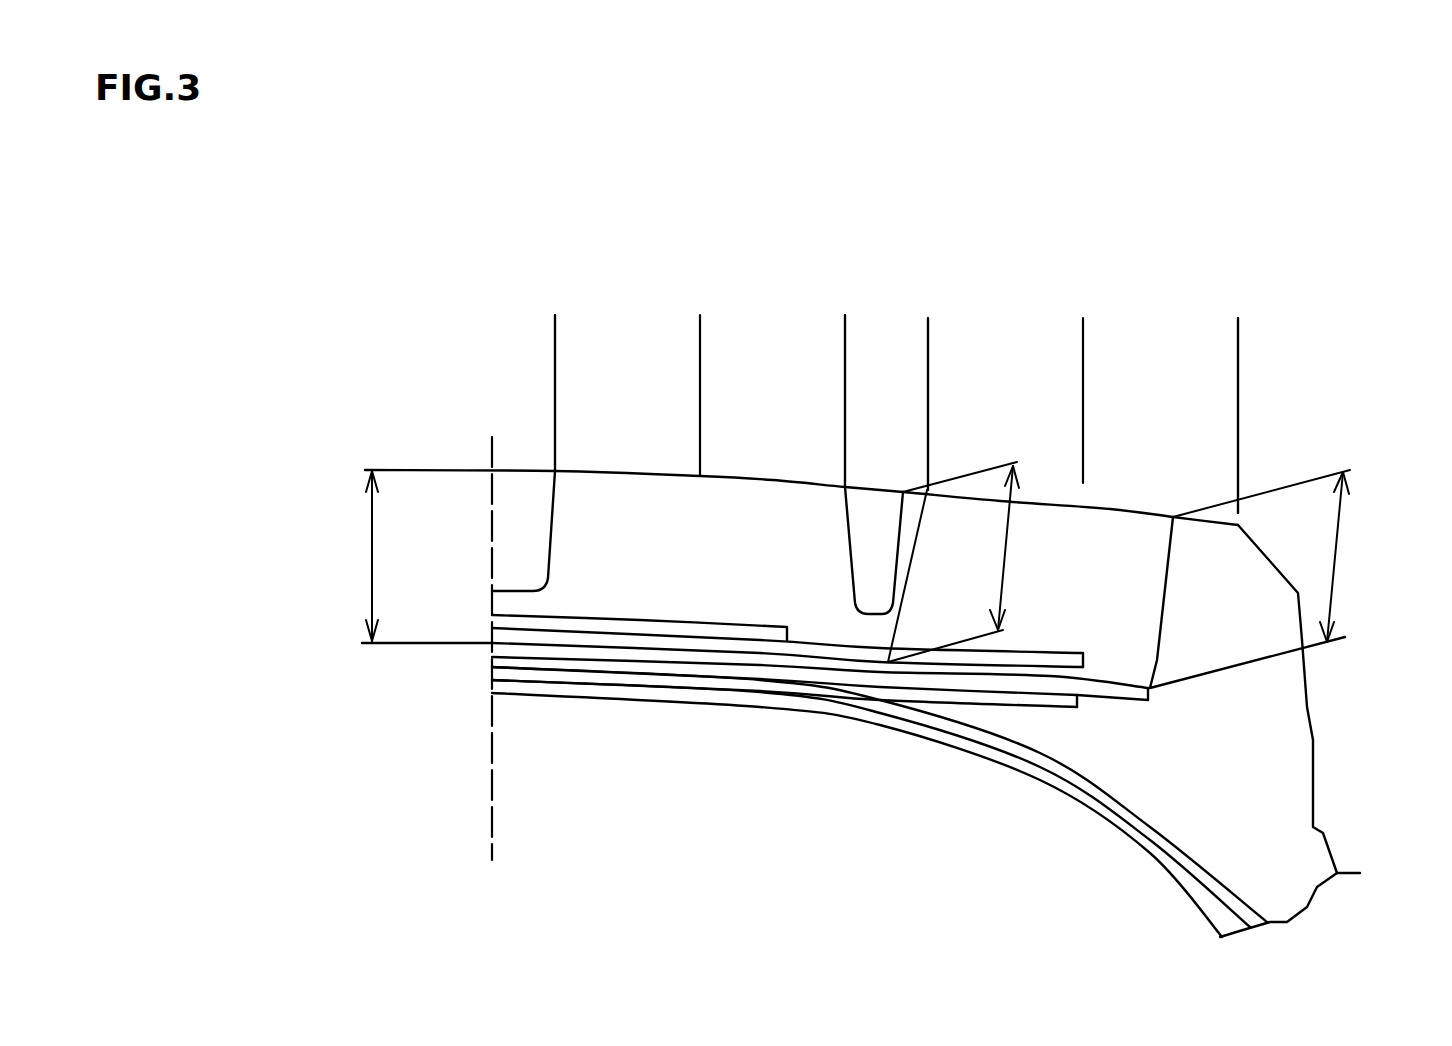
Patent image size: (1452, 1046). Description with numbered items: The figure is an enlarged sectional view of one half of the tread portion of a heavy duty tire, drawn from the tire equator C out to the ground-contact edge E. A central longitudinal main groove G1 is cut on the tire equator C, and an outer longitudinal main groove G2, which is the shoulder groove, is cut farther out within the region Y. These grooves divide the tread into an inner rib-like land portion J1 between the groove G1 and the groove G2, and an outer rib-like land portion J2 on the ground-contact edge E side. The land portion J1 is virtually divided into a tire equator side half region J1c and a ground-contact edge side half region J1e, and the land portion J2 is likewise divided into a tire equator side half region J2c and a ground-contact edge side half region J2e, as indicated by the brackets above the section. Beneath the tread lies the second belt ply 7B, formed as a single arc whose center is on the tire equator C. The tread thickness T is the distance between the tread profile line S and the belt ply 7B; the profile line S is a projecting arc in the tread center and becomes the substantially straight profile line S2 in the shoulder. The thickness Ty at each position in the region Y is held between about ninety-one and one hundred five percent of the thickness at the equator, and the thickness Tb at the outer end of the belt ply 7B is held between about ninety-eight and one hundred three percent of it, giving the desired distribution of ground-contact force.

The tire equator C is at (488, 771).
The tread profile line S is at (638, 473).
The substantially straight profile line S2 is at (1110, 509).
The central longitudinal main groove G1 is at (521, 576).
The outer longitudinal main groove G2 is at (870, 594).
The second belt ply 7B is at (1120, 690).
The tread thickness T is at (370, 553).
The tread thickness in region Y Ty is at (1007, 548).
The tread thickness at outer end of second belt ply Tb is at (1335, 555).
The ground-contact edge E is at (1238, 525).
The inner rib-like land portion J1 is at (700, 319).
The tire equator side half region of inner land portion J1c is at (558, 287).
The ground-contact edge side half region of inner land portion J1e is at (773, 356).
The region Y is at (1022, 163).
The outer rib-like land portion J2 is at (1083, 333).
The tire equator side half region of outer land portion J2c is at (928, 288).
The ground-contact edge side half region of outer land portion J2e is at (1162, 368).